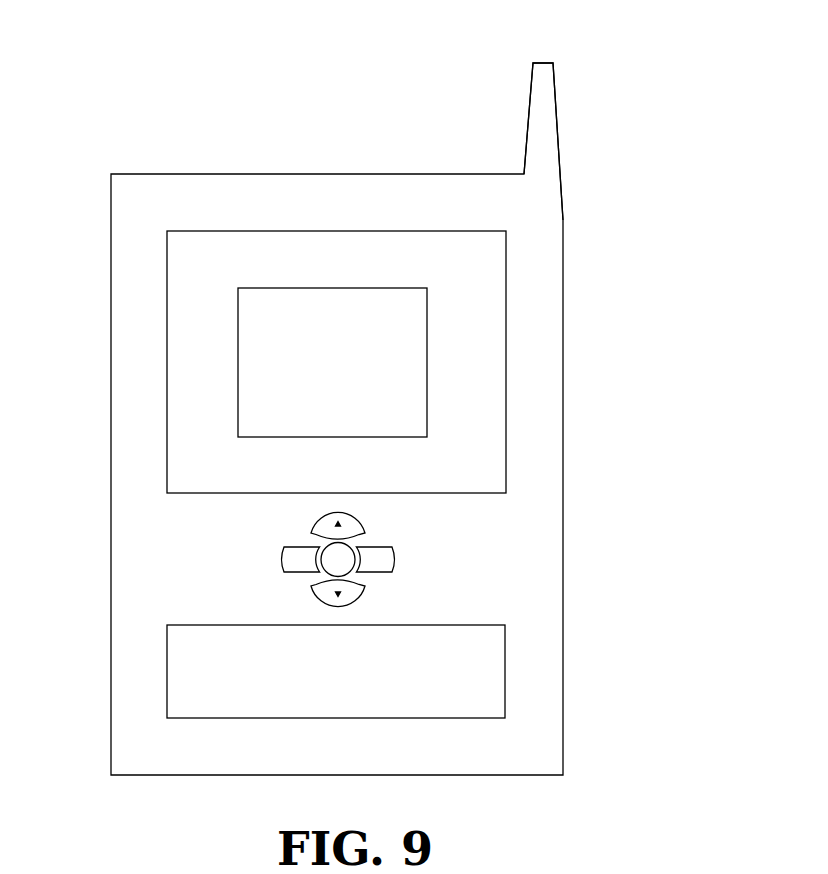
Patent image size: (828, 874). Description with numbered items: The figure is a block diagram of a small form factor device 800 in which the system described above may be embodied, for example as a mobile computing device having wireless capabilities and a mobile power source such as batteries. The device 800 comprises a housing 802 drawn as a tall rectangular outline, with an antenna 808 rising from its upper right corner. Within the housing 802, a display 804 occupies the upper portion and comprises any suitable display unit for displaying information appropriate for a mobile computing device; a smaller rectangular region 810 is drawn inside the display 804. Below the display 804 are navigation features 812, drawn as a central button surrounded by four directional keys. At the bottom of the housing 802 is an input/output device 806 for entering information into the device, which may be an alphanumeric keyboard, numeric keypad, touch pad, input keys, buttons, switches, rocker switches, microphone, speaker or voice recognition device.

The small form factor device 800 is at (130, 82).
The housing 802 is at (563, 475).
The display 804 is at (506, 251).
The input/output (I/O) device 806 is at (506, 663).
The antenna 808 is at (528, 111).
The display window 810 is at (427, 382).
The navigation features 812 is at (410, 550).